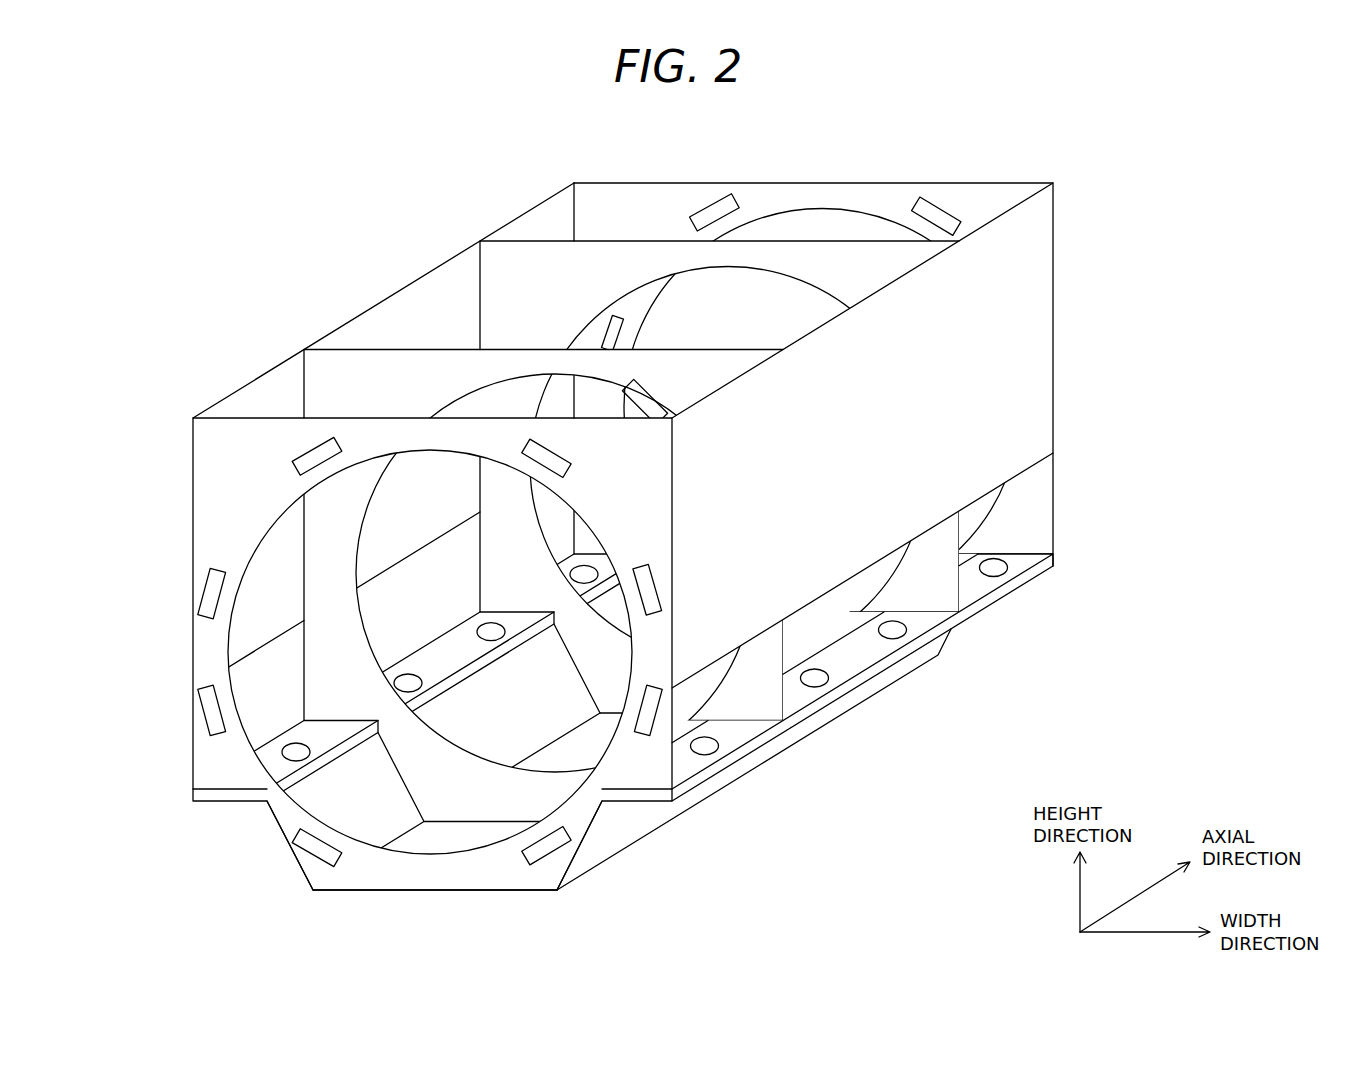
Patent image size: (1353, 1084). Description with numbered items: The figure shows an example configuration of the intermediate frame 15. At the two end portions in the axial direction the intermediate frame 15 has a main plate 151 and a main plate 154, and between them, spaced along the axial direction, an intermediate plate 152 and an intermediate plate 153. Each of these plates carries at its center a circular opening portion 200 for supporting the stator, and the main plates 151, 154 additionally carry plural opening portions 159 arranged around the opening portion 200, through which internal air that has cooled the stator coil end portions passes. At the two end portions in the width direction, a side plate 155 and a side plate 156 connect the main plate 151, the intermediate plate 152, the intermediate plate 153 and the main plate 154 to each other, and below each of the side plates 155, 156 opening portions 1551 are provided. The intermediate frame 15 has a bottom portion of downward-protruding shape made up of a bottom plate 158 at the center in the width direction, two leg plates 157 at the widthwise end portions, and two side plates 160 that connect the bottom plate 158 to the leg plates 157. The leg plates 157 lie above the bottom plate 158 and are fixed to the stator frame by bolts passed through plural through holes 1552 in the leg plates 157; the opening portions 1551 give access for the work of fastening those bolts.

The intermediate frame 15 is at (985, 163).
The main plate 151 is at (205, 470).
The intermediate plate 152 is at (340, 365).
The intermediate plate 153 is at (490, 250).
The main plate 154 is at (606, 205).
The side plate 155 is at (1047, 340).
The side plate 156 is at (410, 300).
The leg plate 157 is at (193, 795).
The bottom plate 158 is at (424, 895).
The opening portion 159 is at (712, 210).
The side plate 160 is at (287, 838).
The opening portion 200 is at (458, 410).
The opening portion 1551 is at (1027, 533).
The through hole 1552 is at (716, 750).